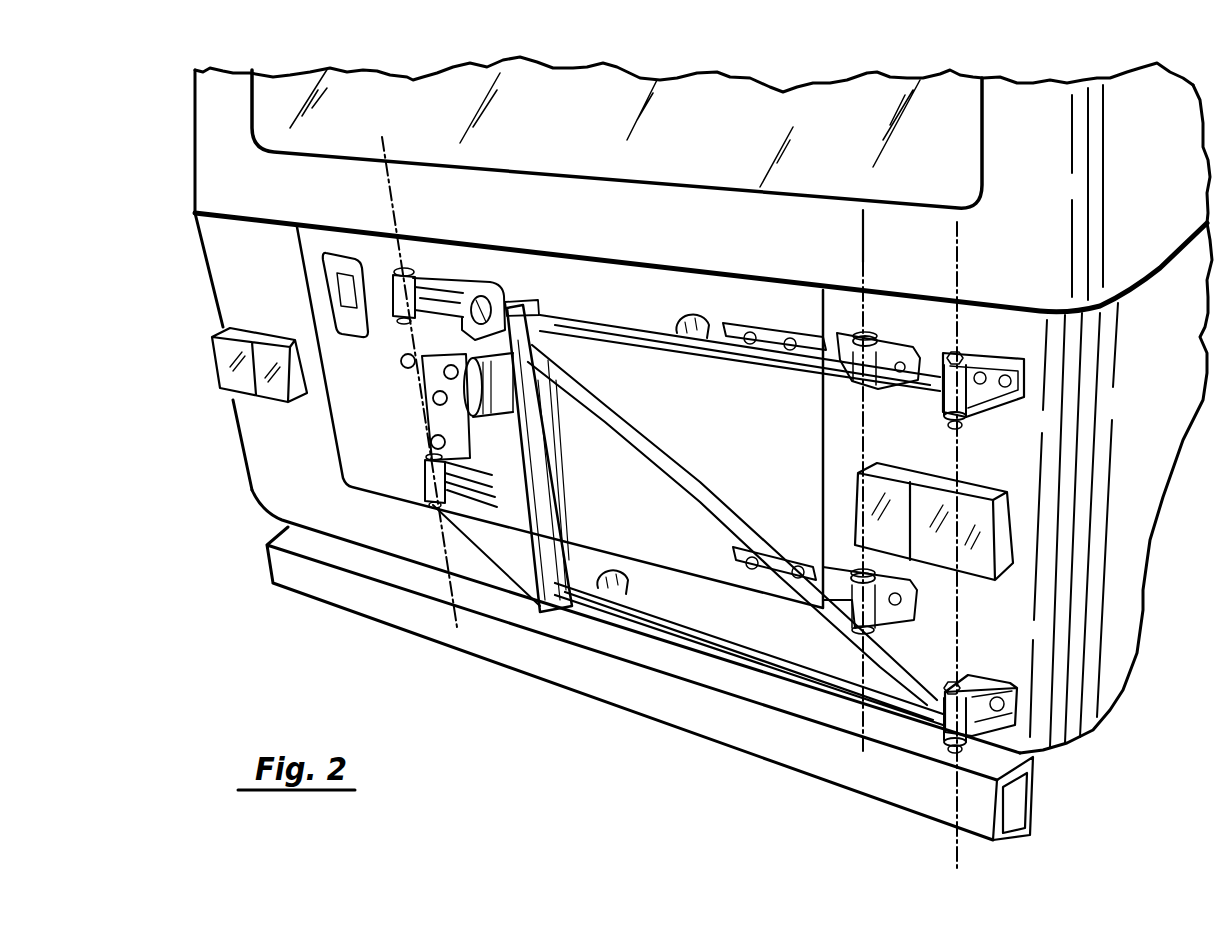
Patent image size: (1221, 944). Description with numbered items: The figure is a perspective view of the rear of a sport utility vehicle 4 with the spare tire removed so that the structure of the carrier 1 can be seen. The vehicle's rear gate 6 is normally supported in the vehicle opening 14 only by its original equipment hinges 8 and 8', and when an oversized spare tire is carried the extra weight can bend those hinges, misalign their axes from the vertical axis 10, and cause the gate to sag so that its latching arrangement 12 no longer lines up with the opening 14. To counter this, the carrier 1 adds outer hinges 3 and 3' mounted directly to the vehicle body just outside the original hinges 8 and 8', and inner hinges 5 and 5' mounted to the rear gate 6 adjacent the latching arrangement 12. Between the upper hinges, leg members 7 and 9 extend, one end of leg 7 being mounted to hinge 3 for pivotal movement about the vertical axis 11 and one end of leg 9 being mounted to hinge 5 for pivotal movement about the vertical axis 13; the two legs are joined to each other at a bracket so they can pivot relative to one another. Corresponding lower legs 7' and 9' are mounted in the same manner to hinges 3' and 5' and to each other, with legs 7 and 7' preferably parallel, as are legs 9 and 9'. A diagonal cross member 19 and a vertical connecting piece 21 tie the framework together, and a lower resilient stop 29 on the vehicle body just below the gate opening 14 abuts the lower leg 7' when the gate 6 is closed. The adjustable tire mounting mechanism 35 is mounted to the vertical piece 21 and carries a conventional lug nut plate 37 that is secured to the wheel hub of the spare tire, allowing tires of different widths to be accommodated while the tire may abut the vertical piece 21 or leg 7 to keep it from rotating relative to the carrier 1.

The carrier 1 is at (1003, 293).
The upper additional hinge 3 is at (983, 369).
The lower additional hinge 3' is at (980, 678).
The sport utility vehicle 4 is at (205, 296).
The upper inner additional hinge 5 is at (403, 382).
The lower inner additional hinge 5' is at (400, 467).
The rear gate 6 is at (760, 438).
The upper leg member 7 is at (740, 297).
The lower leg member 7' is at (749, 673).
The upper original equipment hinge 8 is at (821, 311).
The lower original equipment hinge 8' is at (825, 560).
The upper leg member 9 is at (459, 266).
The lower leg member 9' is at (471, 514).
The vertical axis 10 is at (863, 233).
The vertical axis 11 is at (957, 255).
The latching arrangement 12 is at (343, 285).
The vertical axis 13 is at (367, 173).
The vehicle opening 14 is at (373, 493).
The diagonal cross member 19 is at (647, 447).
The vertical connecting piece 21 is at (545, 507).
The lower resilient stop 29 is at (707, 303).
The tire mounting mechanism 35 is at (527, 393).
The lug nut plate 37 is at (427, 390).